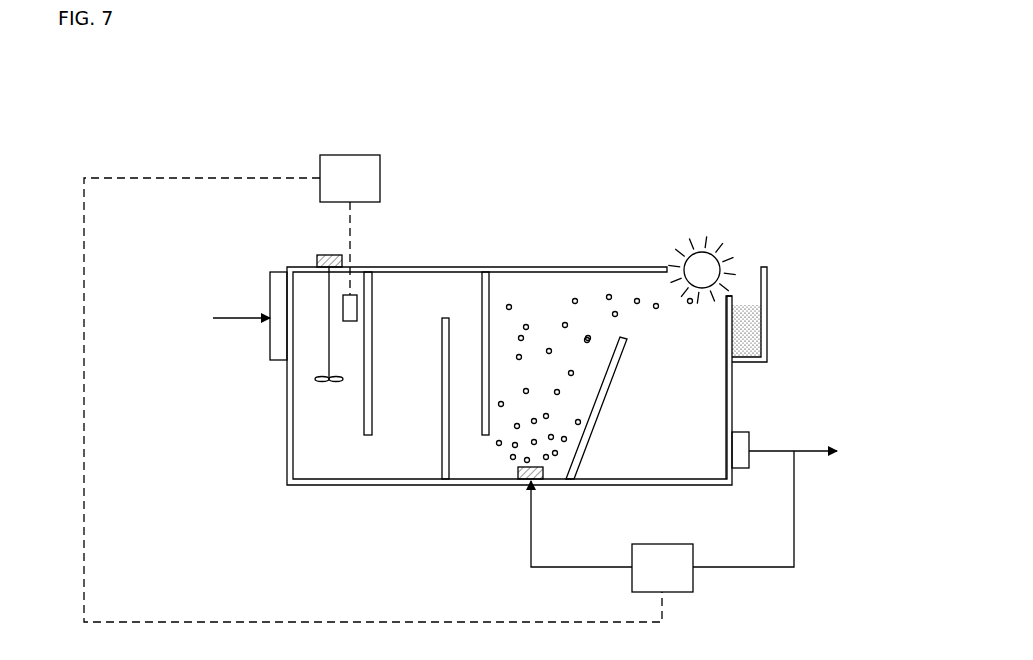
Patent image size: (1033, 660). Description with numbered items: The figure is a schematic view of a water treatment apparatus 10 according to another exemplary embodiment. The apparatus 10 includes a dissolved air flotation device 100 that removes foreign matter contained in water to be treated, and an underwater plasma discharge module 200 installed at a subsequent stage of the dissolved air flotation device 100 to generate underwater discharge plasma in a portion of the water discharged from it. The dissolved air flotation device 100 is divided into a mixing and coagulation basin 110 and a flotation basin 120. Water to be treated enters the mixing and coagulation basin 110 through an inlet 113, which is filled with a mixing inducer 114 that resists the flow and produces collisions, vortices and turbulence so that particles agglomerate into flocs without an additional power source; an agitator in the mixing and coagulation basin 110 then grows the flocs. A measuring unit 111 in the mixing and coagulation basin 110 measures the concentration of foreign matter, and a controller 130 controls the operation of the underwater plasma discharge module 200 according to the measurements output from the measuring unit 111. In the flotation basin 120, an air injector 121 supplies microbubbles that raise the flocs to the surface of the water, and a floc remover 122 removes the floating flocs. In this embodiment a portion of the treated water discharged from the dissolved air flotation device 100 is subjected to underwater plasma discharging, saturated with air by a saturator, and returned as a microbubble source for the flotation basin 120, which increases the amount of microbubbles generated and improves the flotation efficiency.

The water treatment apparatus 10 is at (486, 98).
The dissolved air flotation device 100 is at (493, 266).
The mixing and coagulation basin 110 is at (337, 472).
The measuring unit 111 is at (355, 296).
The inlet 113 is at (277, 369).
The mixing inducer 114 is at (282, 273).
The flotation basin 120 is at (490, 462).
The air injector 121 is at (541, 481).
The floc remover 122 is at (707, 250).
The controller 130 is at (373, 388).
The underwater plasma discharge module 200 is at (662, 521).